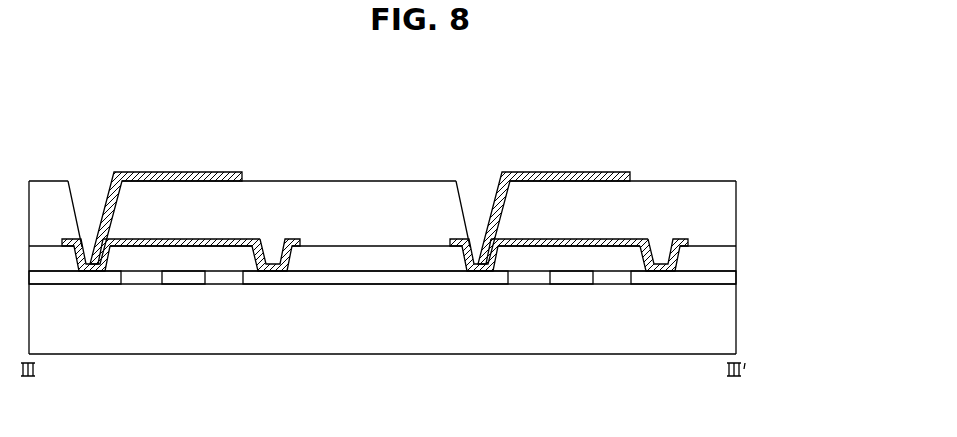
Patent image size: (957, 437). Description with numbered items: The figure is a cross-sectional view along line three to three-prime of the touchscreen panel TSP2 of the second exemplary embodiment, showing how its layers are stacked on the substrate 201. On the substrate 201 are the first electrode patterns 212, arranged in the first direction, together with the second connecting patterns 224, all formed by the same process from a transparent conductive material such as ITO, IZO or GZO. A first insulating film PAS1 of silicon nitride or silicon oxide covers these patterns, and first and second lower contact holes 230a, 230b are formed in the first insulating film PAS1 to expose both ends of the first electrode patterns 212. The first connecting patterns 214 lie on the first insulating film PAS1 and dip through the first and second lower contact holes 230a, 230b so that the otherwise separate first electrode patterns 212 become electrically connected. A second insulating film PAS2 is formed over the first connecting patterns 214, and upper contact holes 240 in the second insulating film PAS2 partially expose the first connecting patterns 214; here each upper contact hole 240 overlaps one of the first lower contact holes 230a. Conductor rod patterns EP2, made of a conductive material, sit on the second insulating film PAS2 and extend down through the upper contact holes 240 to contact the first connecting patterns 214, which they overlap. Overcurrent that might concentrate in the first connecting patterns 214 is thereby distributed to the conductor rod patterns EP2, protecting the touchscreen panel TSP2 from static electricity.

The touchscreen panel TSP2 is at (70, 113).
The substrate 201 is at (727, 313).
The first electrode patterns 212 is at (65, 278).
The second connecting patterns 224 is at (185, 278).
The first insulating film PAS1 is at (727, 252).
The second insulating film PAS2 is at (727, 218).
The upper contact holes 240 is at (100, 208).
The first lower contact holes 230a is at (90, 268).
The second lower contact holes 230b is at (270, 268).
The first connecting patterns 214 is at (212, 240).
The conductor rod patterns EP2 is at (148, 181).